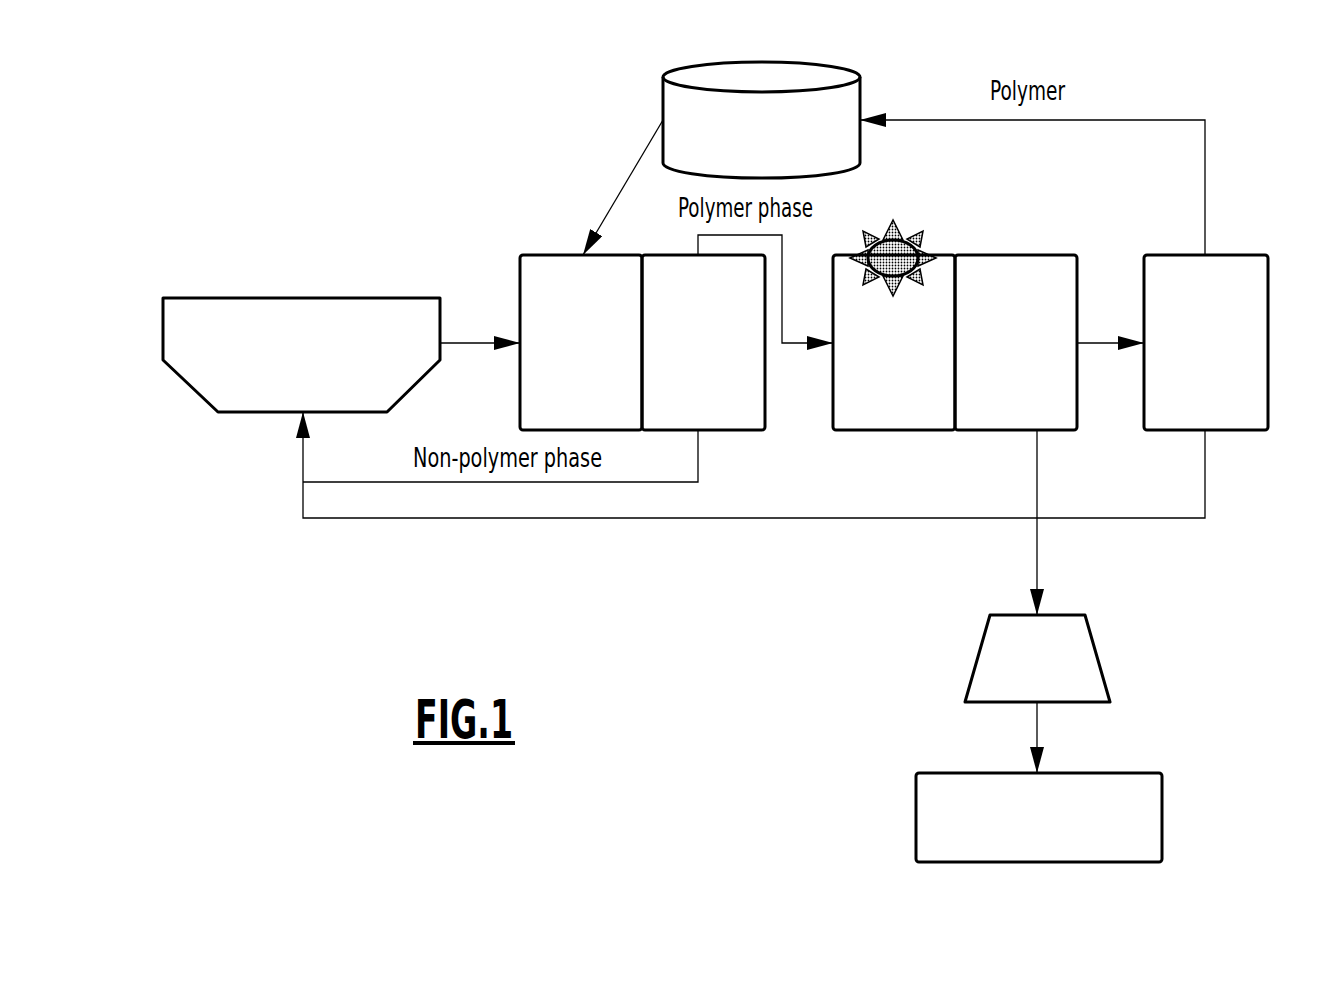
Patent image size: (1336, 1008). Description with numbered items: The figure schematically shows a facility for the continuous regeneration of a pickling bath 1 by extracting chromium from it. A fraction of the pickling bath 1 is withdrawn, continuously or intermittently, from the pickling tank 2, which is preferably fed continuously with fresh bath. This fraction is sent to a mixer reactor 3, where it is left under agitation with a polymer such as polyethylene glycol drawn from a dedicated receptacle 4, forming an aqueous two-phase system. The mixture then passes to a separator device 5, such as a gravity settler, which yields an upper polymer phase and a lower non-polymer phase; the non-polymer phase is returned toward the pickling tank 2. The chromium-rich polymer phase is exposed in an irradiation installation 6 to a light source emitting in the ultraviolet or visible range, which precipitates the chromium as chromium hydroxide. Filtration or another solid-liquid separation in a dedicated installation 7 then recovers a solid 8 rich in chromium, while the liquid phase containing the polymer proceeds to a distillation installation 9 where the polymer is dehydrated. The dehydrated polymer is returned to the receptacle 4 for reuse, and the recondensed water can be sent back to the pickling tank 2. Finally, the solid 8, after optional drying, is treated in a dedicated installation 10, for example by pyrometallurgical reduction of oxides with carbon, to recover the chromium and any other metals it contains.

The pickling bath 1 is at (293, 363).
The pickling tank 2 is at (178, 374).
The mixer reactor 3 is at (572, 352).
The receptacle 4 is at (753, 145).
The separator device 5 is at (694, 352).
The irradiation installation 6 is at (885, 352).
The filtration installation 7 is at (1007, 352).
The solid rich in Cr 8 is at (1028, 678).
The distillation installation 9 is at (1197, 352).
The metal recovery installation 10 is at (1024, 836).